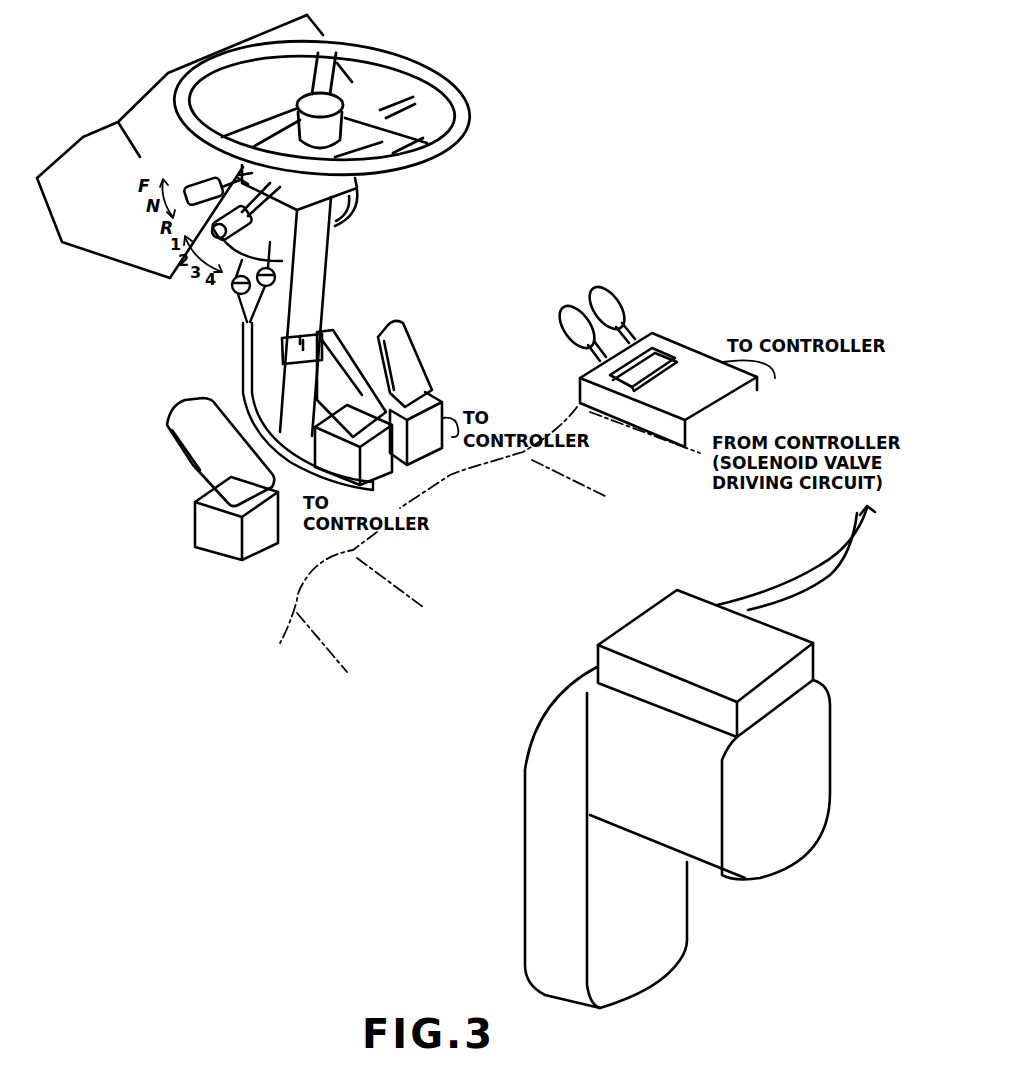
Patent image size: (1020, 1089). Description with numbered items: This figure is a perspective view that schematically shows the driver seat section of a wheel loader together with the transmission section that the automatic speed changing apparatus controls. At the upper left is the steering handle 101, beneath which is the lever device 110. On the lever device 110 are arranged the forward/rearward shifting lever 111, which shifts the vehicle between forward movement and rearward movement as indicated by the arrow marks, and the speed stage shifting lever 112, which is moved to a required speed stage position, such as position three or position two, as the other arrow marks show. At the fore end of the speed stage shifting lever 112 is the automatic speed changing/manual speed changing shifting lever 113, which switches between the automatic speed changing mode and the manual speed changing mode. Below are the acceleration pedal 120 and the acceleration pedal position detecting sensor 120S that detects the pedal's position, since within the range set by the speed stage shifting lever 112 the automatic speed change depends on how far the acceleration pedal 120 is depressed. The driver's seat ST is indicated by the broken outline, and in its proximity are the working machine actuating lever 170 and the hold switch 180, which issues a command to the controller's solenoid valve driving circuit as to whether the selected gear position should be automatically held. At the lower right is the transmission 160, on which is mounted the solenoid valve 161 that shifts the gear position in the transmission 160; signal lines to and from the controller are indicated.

The steering handle 101 is at (460, 85).
The lever device 110 is at (337, 182).
The forward/rearward shifting lever 111 is at (193, 183).
The speed stage shifting lever 112 is at (252, 222).
The automatic speed changing/manual speed changing shifting lever 113 is at (282, 261).
The acceleration pedal 120 is at (415, 337).
The acceleration pedal position detecting sensor 120S is at (443, 397).
The transmission 160 is at (788, 858).
The solenoid valve 161 is at (793, 643).
The working machine actuating lever 170 is at (607, 297).
The hold switch 180 is at (658, 352).
The driver's seat ST is at (475, 542).